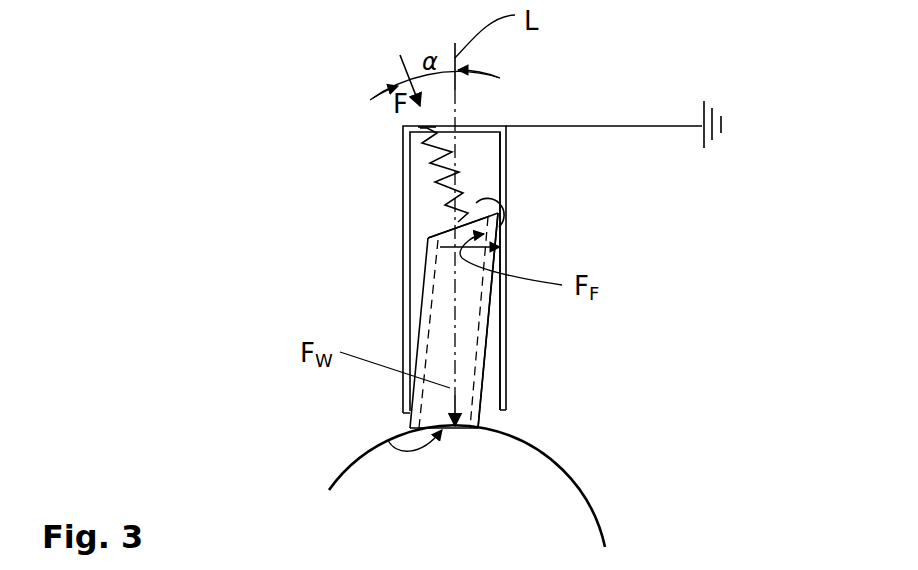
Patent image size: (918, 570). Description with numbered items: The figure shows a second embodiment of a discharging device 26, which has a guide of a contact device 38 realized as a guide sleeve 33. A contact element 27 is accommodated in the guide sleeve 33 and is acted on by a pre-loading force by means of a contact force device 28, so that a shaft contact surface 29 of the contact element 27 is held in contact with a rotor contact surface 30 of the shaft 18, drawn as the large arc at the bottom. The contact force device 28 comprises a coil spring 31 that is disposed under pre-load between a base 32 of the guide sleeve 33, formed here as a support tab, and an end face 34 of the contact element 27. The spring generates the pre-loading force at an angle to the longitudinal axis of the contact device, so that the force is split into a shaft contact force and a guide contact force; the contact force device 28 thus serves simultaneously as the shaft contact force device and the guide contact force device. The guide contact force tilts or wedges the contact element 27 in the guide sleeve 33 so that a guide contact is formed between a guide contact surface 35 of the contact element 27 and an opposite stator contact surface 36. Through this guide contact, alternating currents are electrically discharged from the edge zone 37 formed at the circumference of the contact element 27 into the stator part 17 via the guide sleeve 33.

The stator part 17 is at (730, 113).
The shaft 18 is at (533, 537).
The discharging device 26 is at (565, 231).
The contact element 27 is at (467, 364).
The contact force device 28 is at (467, 162).
The shaft contact surface 29 is at (390, 441).
The rotor contact surface 30 is at (480, 427).
The coil spring 31 is at (448, 177).
The base 32 is at (428, 127).
The guide sleeve 33 is at (507, 338).
The end face 34 is at (465, 226).
The guide contact surface 35 is at (500, 247).
The stator contact surface 36 is at (500, 193).
The edge zone 37 is at (482, 396).
The contact device 38 is at (392, 268).